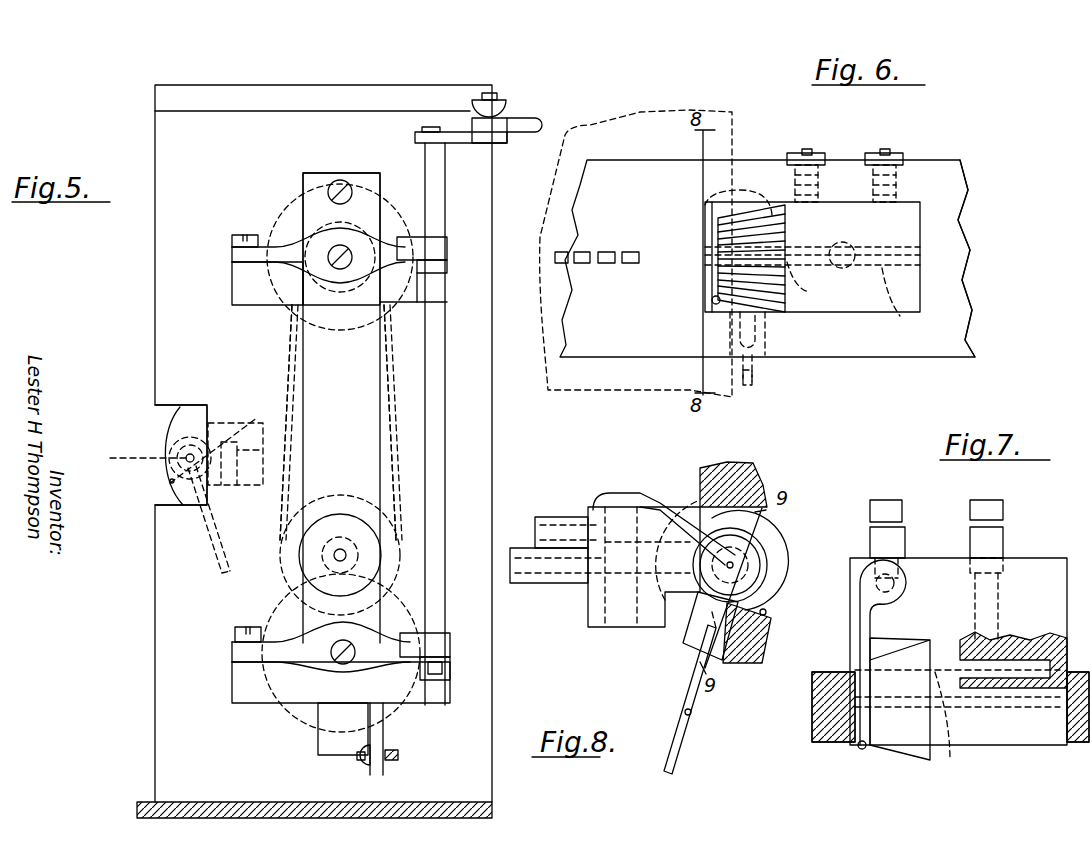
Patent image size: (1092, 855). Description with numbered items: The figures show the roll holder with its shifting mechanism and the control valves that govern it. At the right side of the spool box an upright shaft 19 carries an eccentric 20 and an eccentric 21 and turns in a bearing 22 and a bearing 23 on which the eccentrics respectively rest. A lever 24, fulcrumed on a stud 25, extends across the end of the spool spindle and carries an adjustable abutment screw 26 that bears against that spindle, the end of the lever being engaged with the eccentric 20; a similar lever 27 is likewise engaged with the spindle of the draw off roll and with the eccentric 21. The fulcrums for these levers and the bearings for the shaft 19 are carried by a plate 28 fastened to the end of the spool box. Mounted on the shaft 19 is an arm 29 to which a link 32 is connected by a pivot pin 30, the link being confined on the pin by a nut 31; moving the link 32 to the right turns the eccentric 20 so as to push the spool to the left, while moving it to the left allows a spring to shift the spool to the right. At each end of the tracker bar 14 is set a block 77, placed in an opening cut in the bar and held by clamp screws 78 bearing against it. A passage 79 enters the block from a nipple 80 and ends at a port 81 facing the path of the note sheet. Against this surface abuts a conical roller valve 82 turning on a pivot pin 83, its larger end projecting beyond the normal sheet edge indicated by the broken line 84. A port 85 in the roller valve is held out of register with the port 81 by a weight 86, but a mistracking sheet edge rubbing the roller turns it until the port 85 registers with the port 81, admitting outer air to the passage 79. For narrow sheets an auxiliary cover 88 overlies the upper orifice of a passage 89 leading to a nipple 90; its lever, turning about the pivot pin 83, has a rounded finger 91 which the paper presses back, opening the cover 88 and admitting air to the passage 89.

In FIG. 5, the tracker bar 14 is at (188, 410).
In FIG. 6, the tracker bar 14 is at (972, 290).
In FIG. 7, the tracker bar 14 is at (1082, 735).
In FIG. 5, the upright shaft 19 is at (430, 430).
In FIG. 5, the eccentric 20 is at (418, 240).
In FIG. 5, the eccentric 21 is at (415, 640).
In FIG. 5, the bearing 22 is at (440, 268).
In FIG. 5, the bearing 23 is at (445, 662).
In FIG. 5, the lever 24 is at (350, 262).
In FIG. 5, the stud 25 is at (246, 235).
In FIG. 5, the adjustable abutment screw 26 is at (340, 270).
In FIG. 5, the lever 27 is at (366, 665).
In FIG. 5, the plate 28 is at (313, 360).
In FIG. 5, the arm 29 is at (500, 143).
In FIG. 5, the pivot pin 30 is at (492, 95).
In FIG. 5, the nut 31 is at (510, 104).
In FIG. 5, the link 32 is at (540, 122).
In FIG. 5, the block 77 is at (242, 487).
In FIG. 6, the block 77 is at (838, 312).
In FIG. 7, the block 77 is at (1037, 735).
In FIG. 8, the block 77 is at (608, 612).
In FIG. 6, the clamp screw 78 is at (885, 152).
In FIG. 8, the clamp screw 78 is at (735, 463).
In FIG. 7, the passage 79 is at (1000, 640).
In FIG. 8, the passage 79 is at (600, 588).
In FIG. 7, the nipple 80 is at (1005, 520).
In FIG. 8, the nipple 80 is at (528, 585).
In FIG. 6, the port 81 is at (800, 280).
In FIG. 7, the port 81 is at (952, 760).
In FIG. 8, the port 81 is at (672, 635).
In FIG. 5, the roller valve 82 is at (167, 447).
In FIG. 6, the roller valve 82 is at (780, 232).
In FIG. 7, the roller valve 82 is at (910, 730).
In FIG. 5, the pivot pin 83 is at (168, 450).
In FIG. 6, the pivot pin 83 is at (861, 297).
In FIG. 7, the pivot pin 83 is at (1025, 700).
In FIG. 8, the pivot pin 83 is at (735, 560).
In FIG. 6, the broken line 84 is at (740, 172).
In FIG. 8, the port 85 is at (757, 638).
In FIG. 5, the weight 86 is at (210, 547).
In FIG. 6, the weight 86 is at (755, 380).
In FIG. 8, the weight 86 is at (688, 745).
In FIG. 5, the cover 88 is at (240, 420).
In FIG. 7, the cover 88 is at (895, 598).
In FIG. 8, the cover 88 is at (620, 496).
In FIG. 6, the passage 89 is at (710, 195).
In FIG. 7, the passage 89 is at (910, 583).
In FIG. 8, the passage 89 is at (645, 495).
In FIG. 7, the nipple 90 is at (900, 512).
In FIG. 8, the nipple 90 is at (560, 520).
In FIG. 5, the finger 91 is at (170, 481).
In FIG. 6, the finger 91 is at (710, 302).
In FIG. 7, the finger 91 is at (862, 750).
In FIG. 8, the finger 91 is at (768, 614).